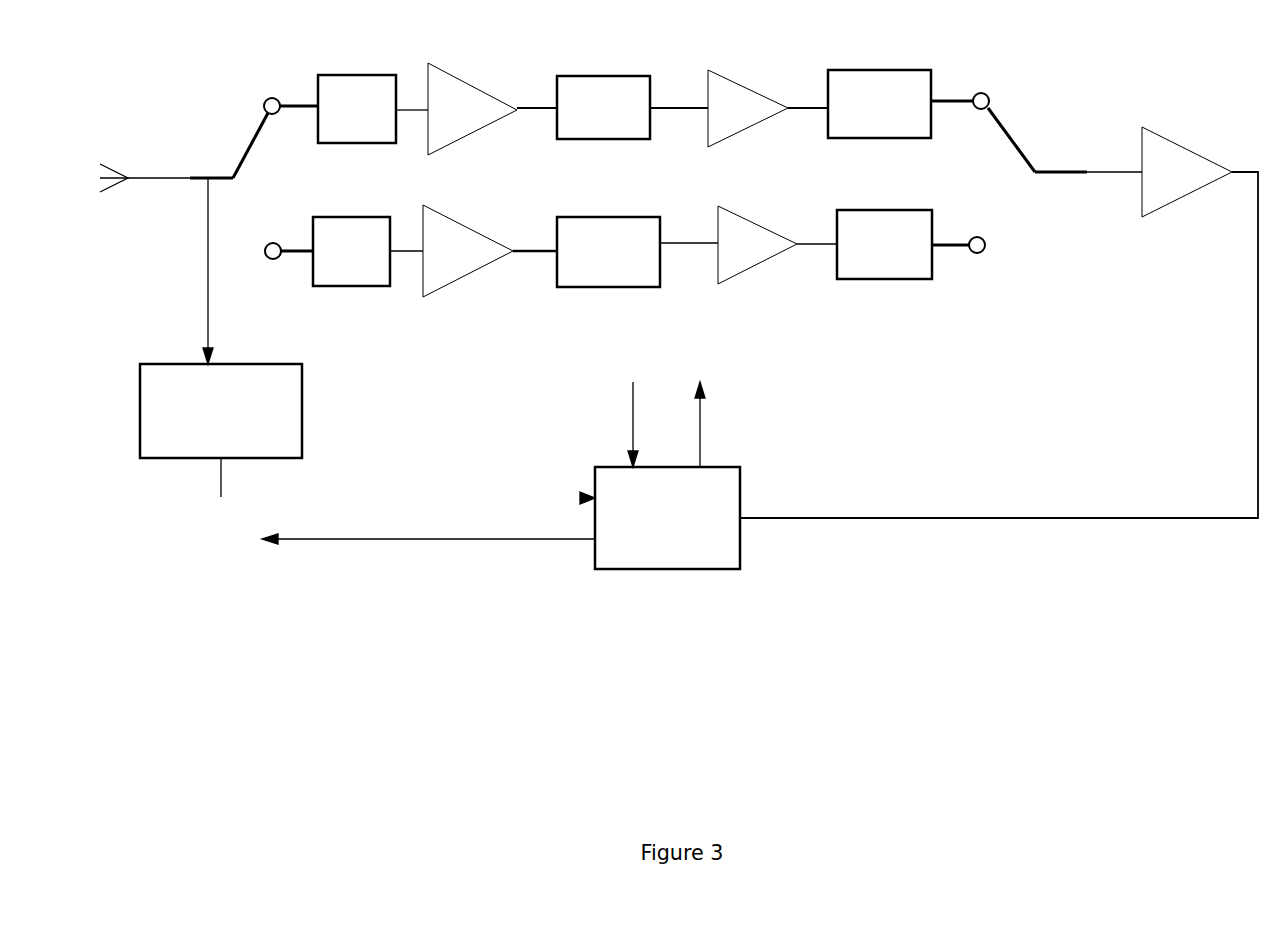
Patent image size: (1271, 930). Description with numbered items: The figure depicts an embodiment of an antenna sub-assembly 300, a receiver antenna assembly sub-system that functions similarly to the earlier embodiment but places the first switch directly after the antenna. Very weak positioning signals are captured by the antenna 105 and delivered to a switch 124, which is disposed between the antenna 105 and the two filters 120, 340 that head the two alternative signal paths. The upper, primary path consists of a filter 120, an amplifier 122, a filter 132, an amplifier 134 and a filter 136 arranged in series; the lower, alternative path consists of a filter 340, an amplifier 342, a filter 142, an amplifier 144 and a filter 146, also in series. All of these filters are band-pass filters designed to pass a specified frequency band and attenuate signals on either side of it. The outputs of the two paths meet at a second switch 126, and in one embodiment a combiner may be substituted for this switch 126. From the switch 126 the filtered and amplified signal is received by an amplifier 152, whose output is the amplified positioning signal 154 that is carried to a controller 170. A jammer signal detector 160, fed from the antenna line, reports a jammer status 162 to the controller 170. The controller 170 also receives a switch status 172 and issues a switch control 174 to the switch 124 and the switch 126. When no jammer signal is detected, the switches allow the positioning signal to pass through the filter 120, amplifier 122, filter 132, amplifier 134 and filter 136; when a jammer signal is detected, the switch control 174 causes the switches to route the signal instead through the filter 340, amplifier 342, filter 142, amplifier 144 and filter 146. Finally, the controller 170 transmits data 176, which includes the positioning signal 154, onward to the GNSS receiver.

The antenna sub-assembly 300 is at (228, 22).
The antenna 105 is at (143, 159).
The filter 120 is at (357, 109).
The amplifier 122 is at (472, 109).
The switch 124 is at (270, 198).
The switch 126 is at (959, 198).
The filter 132 is at (603, 107).
The amplifier 134 is at (748, 108).
The filter 136 is at (879, 104).
The filter 340 is at (351, 251).
The amplifier 342 is at (468, 251).
The filter 142 is at (608, 252).
The amplifier 144 is at (757, 245).
The filter 146 is at (884, 244).
The amplifier 152 is at (1187, 172).
The positioning signal 154 is at (974, 479).
The jammer signal detector 160 is at (207, 437).
The jammer status 162 is at (438, 483).
The controller 170 is at (653, 517).
The switch status 172 is at (581, 420).
The switch control 174 is at (734, 420).
The data 176 is at (398, 586).